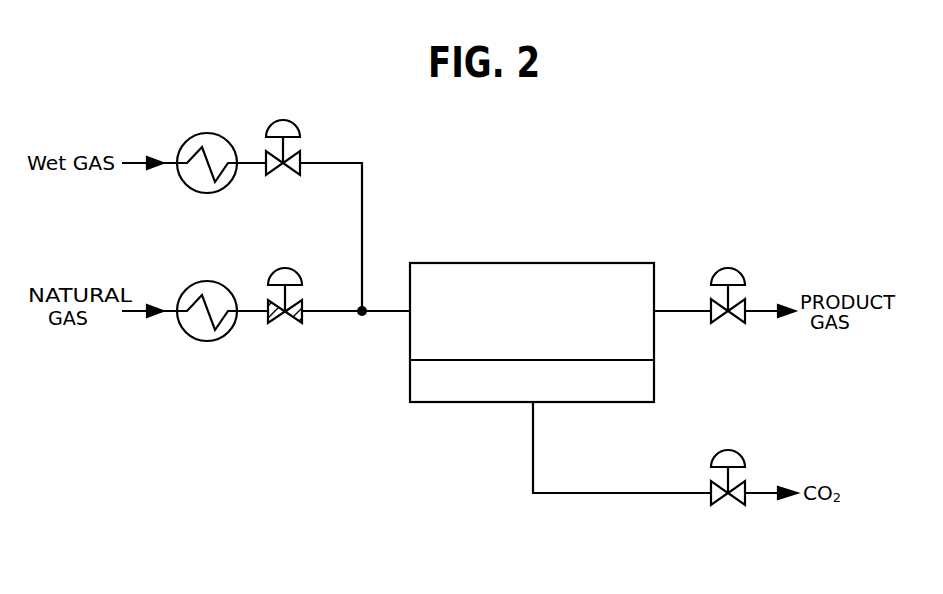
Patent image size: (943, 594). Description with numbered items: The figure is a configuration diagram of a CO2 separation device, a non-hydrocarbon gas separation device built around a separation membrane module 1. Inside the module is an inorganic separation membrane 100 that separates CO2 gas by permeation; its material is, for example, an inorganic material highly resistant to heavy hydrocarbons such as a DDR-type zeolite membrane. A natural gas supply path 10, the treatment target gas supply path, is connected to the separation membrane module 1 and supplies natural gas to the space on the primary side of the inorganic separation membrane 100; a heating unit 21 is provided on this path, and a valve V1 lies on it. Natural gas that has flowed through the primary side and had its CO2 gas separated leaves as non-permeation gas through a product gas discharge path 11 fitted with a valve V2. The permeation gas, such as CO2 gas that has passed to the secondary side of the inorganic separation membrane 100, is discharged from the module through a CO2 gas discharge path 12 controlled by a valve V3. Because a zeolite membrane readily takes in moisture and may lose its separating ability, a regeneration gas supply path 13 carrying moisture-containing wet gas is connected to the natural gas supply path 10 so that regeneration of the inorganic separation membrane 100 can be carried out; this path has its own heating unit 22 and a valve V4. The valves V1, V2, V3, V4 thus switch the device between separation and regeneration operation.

The separation membrane module 1 is at (530, 262).
The inorganic separation membrane 100 is at (490, 360).
The natural gas supply path 10 is at (338, 309).
The product gas discharge path 11 is at (676, 308).
The CO2 gas discharge path 12 is at (615, 497).
The regeneration gas supply path 13 is at (363, 220).
The heating unit 21 is at (206, 281).
The heating unit 22 is at (206, 133).
The valve V1 is at (279, 323).
The valve V2 is at (720, 319).
The valve V3 is at (723, 502).
The valve V4 is at (279, 175).